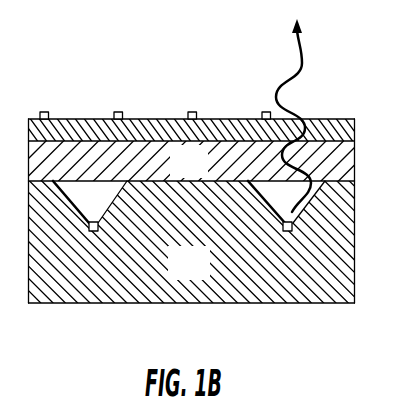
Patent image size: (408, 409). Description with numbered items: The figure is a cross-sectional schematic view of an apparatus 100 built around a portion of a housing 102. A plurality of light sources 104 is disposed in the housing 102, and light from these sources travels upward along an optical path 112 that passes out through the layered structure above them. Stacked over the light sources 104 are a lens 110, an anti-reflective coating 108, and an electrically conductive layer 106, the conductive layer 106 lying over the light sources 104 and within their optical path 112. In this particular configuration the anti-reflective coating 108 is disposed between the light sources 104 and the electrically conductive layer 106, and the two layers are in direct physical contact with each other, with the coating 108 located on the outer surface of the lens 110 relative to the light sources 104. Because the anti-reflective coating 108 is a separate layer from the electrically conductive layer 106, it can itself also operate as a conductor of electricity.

The apparatus 100 is at (142, 85).
The housing 102 is at (202, 275).
The light sources 104 is at (93, 231).
The electrically conductive layer 106 is at (192, 113).
The anti-reflective coating 108 is at (100, 128).
The lens 110 is at (203, 172).
The optical path 112 is at (304, 63).